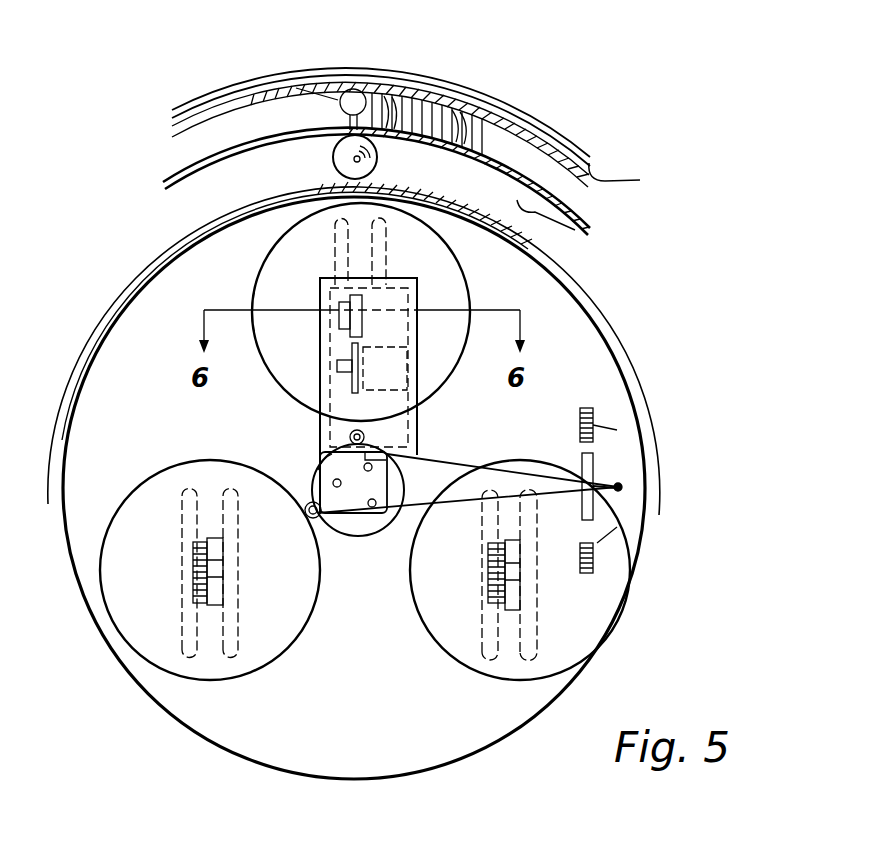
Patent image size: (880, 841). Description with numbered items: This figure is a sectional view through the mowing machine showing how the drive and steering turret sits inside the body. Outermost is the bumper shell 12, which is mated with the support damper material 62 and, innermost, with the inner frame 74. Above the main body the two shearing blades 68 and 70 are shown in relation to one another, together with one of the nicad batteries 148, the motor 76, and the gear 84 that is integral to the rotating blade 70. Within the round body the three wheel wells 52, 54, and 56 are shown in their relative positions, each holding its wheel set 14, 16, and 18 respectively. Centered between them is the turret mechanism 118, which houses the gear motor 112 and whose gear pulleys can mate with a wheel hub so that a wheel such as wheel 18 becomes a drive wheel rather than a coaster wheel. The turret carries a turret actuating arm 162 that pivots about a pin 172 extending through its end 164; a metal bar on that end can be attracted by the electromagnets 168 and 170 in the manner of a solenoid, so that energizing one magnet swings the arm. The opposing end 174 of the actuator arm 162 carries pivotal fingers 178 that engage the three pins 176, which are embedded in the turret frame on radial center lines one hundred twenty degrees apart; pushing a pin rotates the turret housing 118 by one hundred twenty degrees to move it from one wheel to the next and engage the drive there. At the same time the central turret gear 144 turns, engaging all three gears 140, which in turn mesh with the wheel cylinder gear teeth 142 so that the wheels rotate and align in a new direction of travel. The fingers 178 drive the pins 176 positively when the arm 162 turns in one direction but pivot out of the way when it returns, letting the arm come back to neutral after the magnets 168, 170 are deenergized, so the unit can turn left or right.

The bumper shell 12 is at (493, 90).
The wheel set 14 is at (237, 655).
The wheel set 16 is at (523, 660).
The wheel set 18 is at (386, 255).
The wheel well 52 is at (154, 538).
The wheel well 54 is at (581, 613).
The wheel well 56 is at (297, 284).
The support damper material 62 is at (354, 88).
The shearing blade 68 is at (461, 132).
The shearing blade 70 is at (587, 148).
The inner frame 74 is at (640, 180).
The motor 76 is at (343, 158).
The gear 84 is at (575, 230).
The gear motor 112 is at (367, 382).
The turret mechanism 118 is at (420, 433).
The gear 140 is at (305, 503).
The gear teeth 142 is at (308, 516).
The central turret gear 144 is at (320, 462).
The nicad battery 148 is at (296, 88).
The turret actuating arm 162 is at (440, 468).
The end 164 is at (622, 483).
The electromagnet 168 is at (593, 413).
The electromagnet 170 is at (595, 560).
The pin 172 is at (622, 489).
The opposing end 174 is at (407, 503).
The pins 176 is at (339, 488).
The pivotal fingers 178 is at (375, 482).